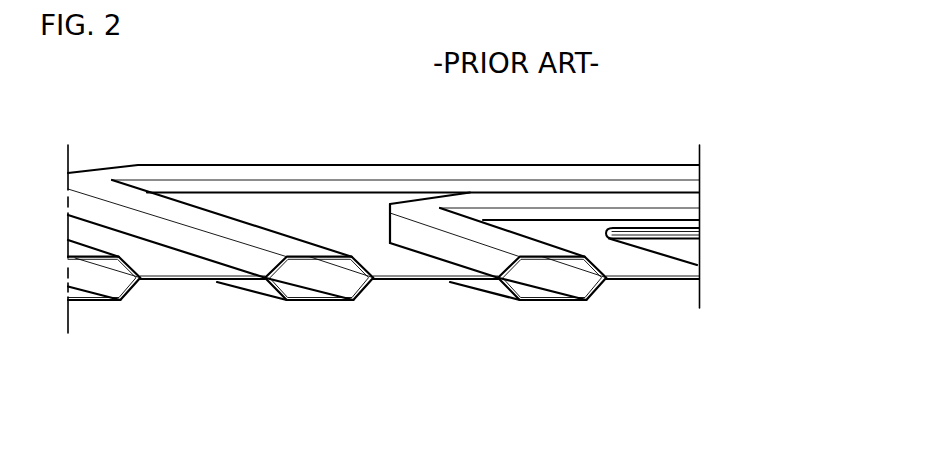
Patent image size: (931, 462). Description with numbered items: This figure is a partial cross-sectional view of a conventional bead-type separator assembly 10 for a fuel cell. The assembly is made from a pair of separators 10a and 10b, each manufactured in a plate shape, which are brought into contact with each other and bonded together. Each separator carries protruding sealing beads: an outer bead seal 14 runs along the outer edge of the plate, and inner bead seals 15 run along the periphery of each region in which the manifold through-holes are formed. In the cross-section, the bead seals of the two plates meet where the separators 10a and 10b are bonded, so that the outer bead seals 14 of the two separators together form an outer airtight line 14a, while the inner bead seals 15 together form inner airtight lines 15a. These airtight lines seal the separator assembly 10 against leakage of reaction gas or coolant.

The bead-type separator assembly 10 is at (462, 245).
The separator 10a is at (688, 268).
The separator 10b is at (684, 278).
The outer bead seal 14 is at (335, 257).
The outer airtight line 14a is at (310, 290).
The inner bead seal 15 is at (568, 257).
The inner airtight line 15a is at (543, 290).